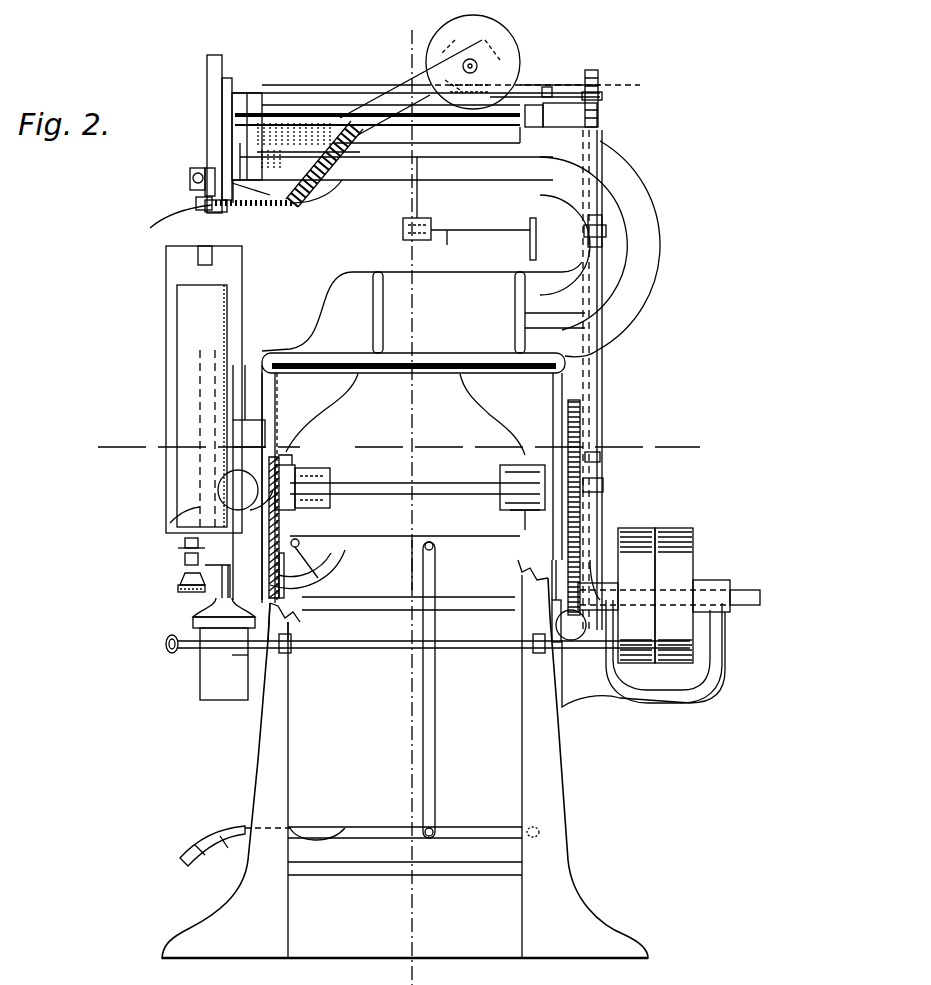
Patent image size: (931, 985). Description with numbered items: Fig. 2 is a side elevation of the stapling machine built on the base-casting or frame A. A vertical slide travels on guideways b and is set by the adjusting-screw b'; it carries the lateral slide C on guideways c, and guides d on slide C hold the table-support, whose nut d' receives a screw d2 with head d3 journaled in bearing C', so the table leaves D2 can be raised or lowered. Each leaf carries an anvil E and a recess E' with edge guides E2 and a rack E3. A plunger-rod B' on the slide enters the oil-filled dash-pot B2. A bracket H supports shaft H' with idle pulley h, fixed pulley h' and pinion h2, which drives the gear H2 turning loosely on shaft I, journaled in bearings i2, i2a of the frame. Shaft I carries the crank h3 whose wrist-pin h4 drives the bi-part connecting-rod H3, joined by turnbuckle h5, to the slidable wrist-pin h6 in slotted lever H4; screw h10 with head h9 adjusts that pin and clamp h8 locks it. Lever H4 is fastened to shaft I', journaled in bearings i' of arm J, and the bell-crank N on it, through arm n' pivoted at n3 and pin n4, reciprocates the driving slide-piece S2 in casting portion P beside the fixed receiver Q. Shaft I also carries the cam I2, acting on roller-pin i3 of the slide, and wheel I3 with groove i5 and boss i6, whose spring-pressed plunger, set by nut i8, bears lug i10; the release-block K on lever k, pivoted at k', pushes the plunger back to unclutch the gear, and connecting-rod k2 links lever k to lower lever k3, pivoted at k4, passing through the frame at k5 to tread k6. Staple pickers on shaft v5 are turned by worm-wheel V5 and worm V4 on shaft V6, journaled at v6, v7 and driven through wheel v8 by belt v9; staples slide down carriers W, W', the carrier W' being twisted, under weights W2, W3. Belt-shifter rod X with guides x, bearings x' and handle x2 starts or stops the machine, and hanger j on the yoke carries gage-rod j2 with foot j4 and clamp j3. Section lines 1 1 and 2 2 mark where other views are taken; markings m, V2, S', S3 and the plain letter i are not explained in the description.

The section line 1 is at (389, 444).
The section line 2 is at (412, 496).
The base-casting or frame A is at (250, 768).
The belt-shifter rod X is at (345, 660).
The release-block K is at (515, 548).
The connecting-rod k2 is at (434, 708).
The lower lever k3 is at (452, 830).
The rod m is at (333, 870).
The frame passage k5 is at (312, 828).
The tread k6 is at (204, 830).
The pivot k4 is at (536, 845).
The handle x2 is at (168, 644).
The bearings x' is at (406, 657).
The shaft I is at (413, 423).
The arm of the machine-frame J is at (423, 432).
The cam I2 is at (300, 466).
The wheel I3 is at (520, 455).
The roller-pin i3 is at (285, 456).
The gear i2a is at (330, 470).
The bearings i' is at (347, 466).
The bearings i2 is at (535, 462).
The annular groove i5 is at (515, 470).
The nut i8 is at (505, 485).
The boss i6 is at (505, 496).
The lug i10 is at (528, 520).
The anvil E is at (171, 389).
The recess E' is at (235, 388).
The rack E3 is at (202, 438).
The guides E2 is at (185, 502).
The table leaves D2 is at (166, 392).
The guideways c is at (230, 428).
The guideways b is at (238, 483).
The adjusting-screw b' is at (279, 509).
The guides d is at (151, 534).
The nut d' is at (169, 555).
The screw d2 is at (178, 565).
The bearing C' is at (174, 578).
The slide C is at (166, 581).
The head d3 is at (247, 567).
The plunger-rod B' is at (197, 604).
The dash-pot B2 is at (224, 664).
The pivot k' is at (307, 566).
The lever k is at (384, 565).
The rack V2 is at (592, 530).
The crank h3 is at (603, 490).
The wrist-pin h4 is at (602, 460).
The gear H2 is at (597, 570).
The pinion h2 is at (571, 625).
The bracket H is at (643, 653).
The pulley h' is at (636, 595).
The idle pulley h is at (674, 595).
The guides x is at (661, 566).
The shaft H' is at (764, 592).
The carrier W is at (377, 90).
The weight W2 is at (330, 110).
The weight W3 is at (490, 65).
The carrier W' is at (386, 134).
The shaft I' is at (393, 173).
The casting portion P is at (222, 62).
The bell-crank N is at (295, 108).
The journal v7 is at (240, 95).
The shaft V6 is at (310, 108).
The stop S' is at (165, 173).
The stop S3 is at (196, 168).
The slide-piece S2 is at (196, 203).
The fixed receiver Q is at (171, 228).
The pivot n3 is at (278, 191).
The bell-crank arm n' is at (267, 176).
The pin n4 is at (232, 213).
The worm-wheel V5 is at (495, 38).
The shaft v5 is at (465, 45).
The worm V4 is at (535, 105).
The pin i is at (542, 81).
The journal v6 is at (578, 100).
The head h9 is at (600, 80).
The driving-wheel v8 is at (604, 88).
The screw h10 is at (608, 96).
The lever H4 is at (605, 104).
The slidable wrist-pin h6 is at (612, 111).
The clamp h8 is at (602, 122).
The bi-part connecting-rod H3 is at (605, 180).
The belt v9 is at (640, 200).
The turnbuckle h5 is at (606, 242).
The hanger j is at (434, 230).
The clamp j3 is at (430, 240).
The gage-rod j2 is at (471, 240).
The foot j4 is at (530, 245).